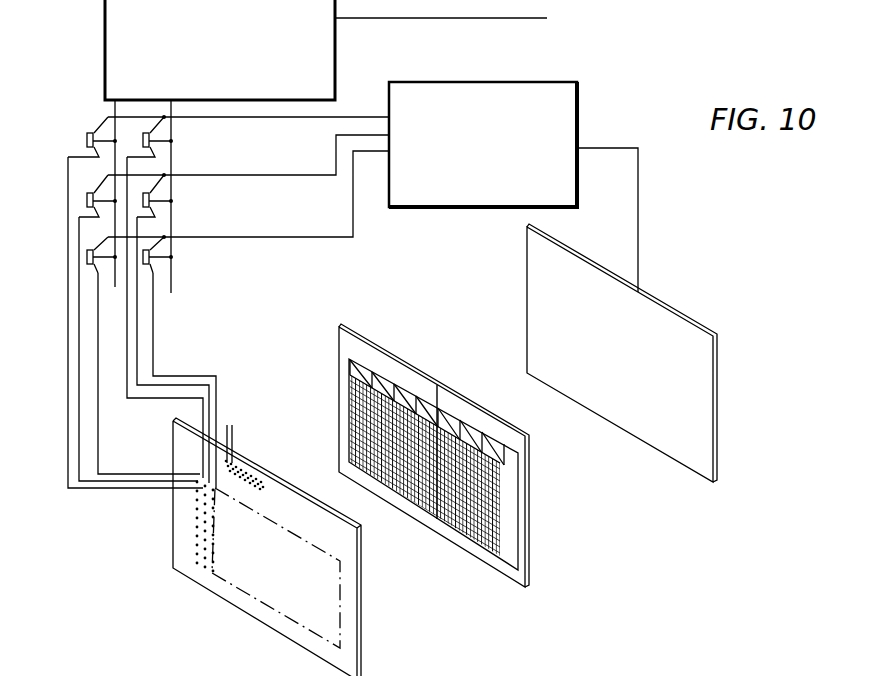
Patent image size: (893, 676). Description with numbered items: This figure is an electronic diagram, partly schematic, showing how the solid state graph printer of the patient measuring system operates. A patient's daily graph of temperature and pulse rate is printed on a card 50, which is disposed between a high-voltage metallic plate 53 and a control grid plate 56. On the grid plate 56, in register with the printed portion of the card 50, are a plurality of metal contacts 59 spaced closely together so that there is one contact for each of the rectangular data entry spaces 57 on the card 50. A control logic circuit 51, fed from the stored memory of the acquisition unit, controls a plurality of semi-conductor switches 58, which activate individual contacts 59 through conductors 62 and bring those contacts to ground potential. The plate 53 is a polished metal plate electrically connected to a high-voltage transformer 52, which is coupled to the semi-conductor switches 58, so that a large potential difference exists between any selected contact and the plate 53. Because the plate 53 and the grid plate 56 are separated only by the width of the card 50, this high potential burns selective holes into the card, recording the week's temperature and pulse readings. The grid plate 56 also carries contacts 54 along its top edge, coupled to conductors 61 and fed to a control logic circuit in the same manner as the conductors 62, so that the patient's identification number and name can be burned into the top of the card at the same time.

The card 50 is at (525, 570).
The control logic circuit 51 is at (105, 18).
The high-voltage transformer 52 is at (446, 208).
The high-voltage metallic plate 53 is at (717, 452).
The contacts 54 is at (263, 483).
The control grid plate 56 is at (350, 588).
The rectangular data entry spaces 57 is at (493, 560).
The semi-conductor switches 58 is at (87, 138).
The metal contacts 59 is at (197, 538).
The conductors 61 is at (233, 433).
The conductors 62 is at (153, 344).